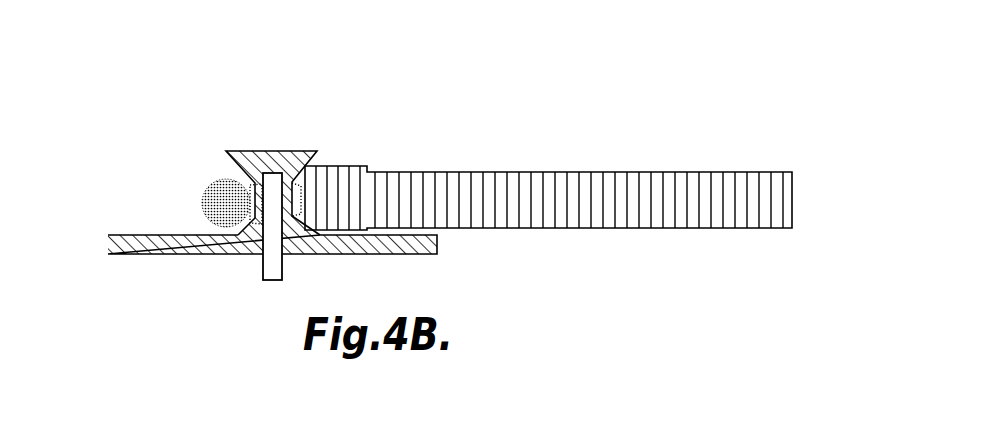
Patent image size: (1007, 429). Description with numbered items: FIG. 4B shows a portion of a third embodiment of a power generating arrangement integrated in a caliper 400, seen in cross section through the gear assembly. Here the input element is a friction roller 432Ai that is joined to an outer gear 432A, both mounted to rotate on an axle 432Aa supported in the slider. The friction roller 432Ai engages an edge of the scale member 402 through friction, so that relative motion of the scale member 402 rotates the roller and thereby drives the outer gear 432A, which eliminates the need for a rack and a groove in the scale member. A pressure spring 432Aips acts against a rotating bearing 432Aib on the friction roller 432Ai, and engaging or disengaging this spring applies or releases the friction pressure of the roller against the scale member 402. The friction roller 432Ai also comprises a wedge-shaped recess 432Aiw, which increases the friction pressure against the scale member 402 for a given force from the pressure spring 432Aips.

The caliper 400 is at (728, 115).
The scale member 402 is at (602, 172).
The outer gear 432A is at (427, 254).
The friction roller 432Ai is at (240, 150).
The rotating bearing 432Aib is at (247, 182).
The pressure spring 432Aips is at (202, 205).
The wedge-shaped recess 432Aiw is at (319, 163).
The axle 432Aa is at (275, 267).